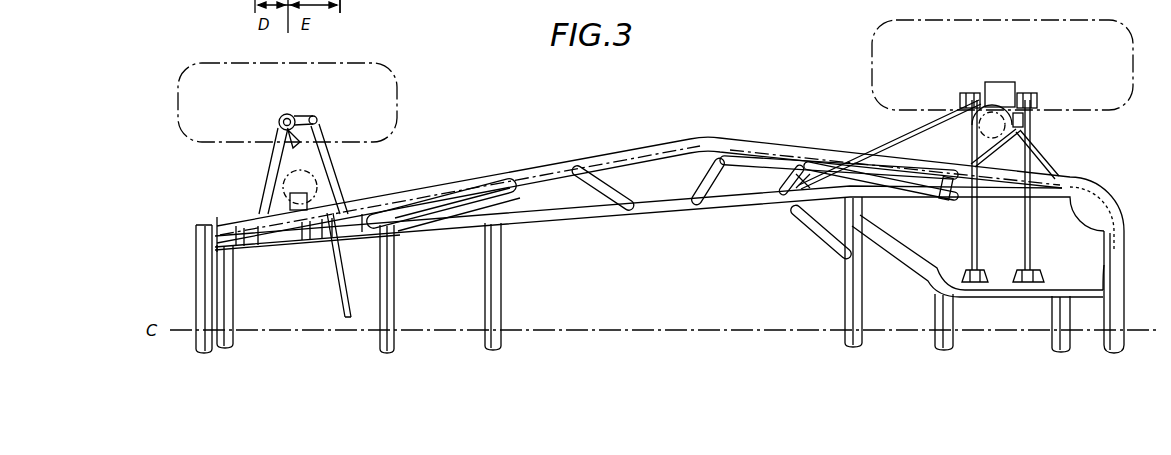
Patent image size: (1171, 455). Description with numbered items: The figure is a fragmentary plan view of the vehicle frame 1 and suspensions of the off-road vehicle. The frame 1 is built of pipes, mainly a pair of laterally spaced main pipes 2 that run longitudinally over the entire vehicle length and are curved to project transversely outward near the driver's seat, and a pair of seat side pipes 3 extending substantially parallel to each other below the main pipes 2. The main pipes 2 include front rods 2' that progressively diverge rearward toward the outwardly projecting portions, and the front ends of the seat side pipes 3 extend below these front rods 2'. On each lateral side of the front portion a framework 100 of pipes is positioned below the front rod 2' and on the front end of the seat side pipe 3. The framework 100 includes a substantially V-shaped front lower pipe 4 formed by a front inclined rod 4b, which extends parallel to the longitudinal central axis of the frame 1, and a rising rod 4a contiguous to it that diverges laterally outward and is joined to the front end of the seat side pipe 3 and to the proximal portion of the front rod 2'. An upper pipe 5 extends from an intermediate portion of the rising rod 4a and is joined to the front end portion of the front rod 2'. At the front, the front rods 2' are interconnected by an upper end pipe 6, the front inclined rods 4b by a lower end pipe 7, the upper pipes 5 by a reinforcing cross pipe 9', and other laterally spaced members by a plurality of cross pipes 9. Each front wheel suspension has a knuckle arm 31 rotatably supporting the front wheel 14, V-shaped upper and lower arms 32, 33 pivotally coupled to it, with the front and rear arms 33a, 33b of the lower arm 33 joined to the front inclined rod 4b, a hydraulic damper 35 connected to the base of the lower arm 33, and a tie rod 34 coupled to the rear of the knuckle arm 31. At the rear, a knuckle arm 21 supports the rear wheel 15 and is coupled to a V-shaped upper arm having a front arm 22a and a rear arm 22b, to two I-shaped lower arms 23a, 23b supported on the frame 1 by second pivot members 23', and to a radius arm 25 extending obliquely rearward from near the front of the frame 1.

The vehicle frame 1 is at (712, 128).
The main pipe 2 is at (670, 230).
The front rod 2' is at (640, 183).
The seat side pipe 3 is at (590, 207).
The front lower pipe 4 is at (400, 242).
The rising rod 4a is at (453, 207).
The front inclined rod 4b is at (298, 240).
The upper pipe 5 is at (403, 207).
The upper end pipe 6 is at (197, 273).
The lower end pipe 7 is at (223, 306).
The cross pipe 9 is at (777, 274).
The reinforcing cross pipe 9' is at (402, 289).
The front wheel 14 is at (398, 63).
The rear wheel 15 is at (880, 22).
The knuckle arm 21 is at (997, 84).
The front arm 22a is at (1040, 150).
The rear arm 22b is at (1063, 160).
The lower arm 23a is at (970, 228).
The lower arm 23b is at (1031, 240).
The second pivot member 23' is at (1003, 249).
The radius arm 25 is at (890, 141).
The knuckle arm 31 is at (300, 117).
The upper arm 32 is at (333, 172).
The lower arm 33 is at (340, 195).
The front arm 33a is at (265, 16).
The rear arm 33b is at (371, 10).
The tie rod 34 is at (337, 283).
The hydraulic damper 35 is at (262, 182).
The framework 100 is at (421, 238).